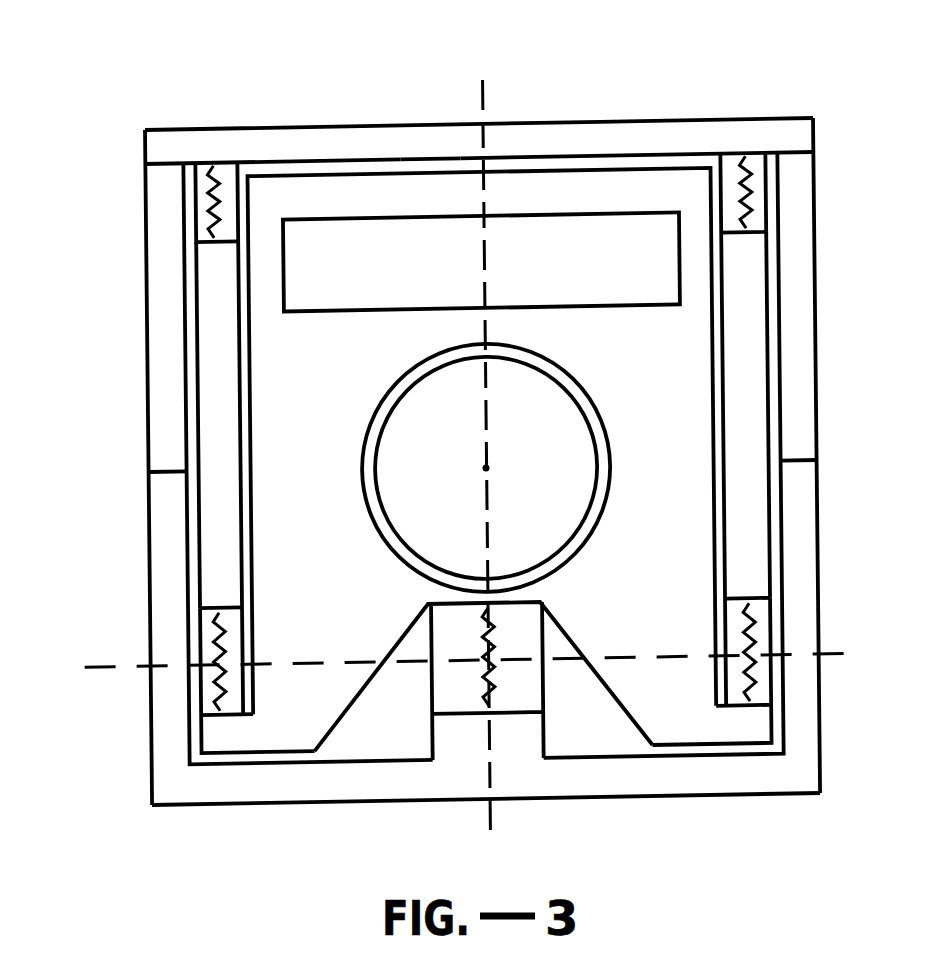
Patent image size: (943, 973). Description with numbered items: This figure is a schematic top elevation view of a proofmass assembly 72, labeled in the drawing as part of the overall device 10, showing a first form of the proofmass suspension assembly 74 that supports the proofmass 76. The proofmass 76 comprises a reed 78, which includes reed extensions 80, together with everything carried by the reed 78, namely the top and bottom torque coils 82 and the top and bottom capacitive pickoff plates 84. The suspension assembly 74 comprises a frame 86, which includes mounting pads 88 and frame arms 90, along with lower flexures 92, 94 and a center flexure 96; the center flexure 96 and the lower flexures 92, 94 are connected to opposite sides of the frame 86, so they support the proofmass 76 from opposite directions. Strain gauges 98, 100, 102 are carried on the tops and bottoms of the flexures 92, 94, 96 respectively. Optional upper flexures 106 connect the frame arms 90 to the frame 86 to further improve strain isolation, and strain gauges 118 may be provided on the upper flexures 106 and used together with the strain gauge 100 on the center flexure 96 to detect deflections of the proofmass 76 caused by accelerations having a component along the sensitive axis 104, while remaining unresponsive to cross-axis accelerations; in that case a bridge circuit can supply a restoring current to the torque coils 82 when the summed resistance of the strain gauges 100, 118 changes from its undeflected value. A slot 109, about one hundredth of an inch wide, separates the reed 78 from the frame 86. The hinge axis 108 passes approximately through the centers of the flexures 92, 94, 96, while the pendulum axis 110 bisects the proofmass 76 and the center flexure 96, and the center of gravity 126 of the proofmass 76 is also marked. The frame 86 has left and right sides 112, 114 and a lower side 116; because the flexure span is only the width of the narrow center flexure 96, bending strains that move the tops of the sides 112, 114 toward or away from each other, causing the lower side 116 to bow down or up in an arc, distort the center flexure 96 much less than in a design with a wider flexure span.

The apparatus 10 is at (615, 133).
The proofmass assembly 72 is at (153, 46).
The proofmass suspension assembly 74 is at (93, 120).
The proofmass 76 is at (92, 168).
The reed 78 is at (255, 383).
The reed extensions 80 is at (224, 740).
The torque coils 82 is at (567, 549).
The capacitive pickoff plates 84 is at (578, 297).
The frame 86 is at (681, 78).
The mounting pads 88 is at (147, 280).
The frame arms 90 is at (202, 335).
The lower flexure 92 is at (202, 632).
The lower flexure 94 is at (767, 630).
The center flexure 96 is at (538, 702).
The strain gauge 98 is at (202, 712).
The strain gauge 100 is at (487, 675).
The strain gauge 102 is at (753, 683).
The sensitive axis 104 is at (486, 468).
The upper flexures 106 is at (195, 228).
The hinge axis 108 is at (92, 665).
The slot 109 is at (430, 166).
The pendulum axis 110 is at (484, 102).
The left side of frame 112 is at (150, 599).
The right side of frame 114 is at (820, 585).
The lower side of frame 116 is at (553, 793).
The strain gauges 118 is at (208, 202).
The center of gravity 126 is at (486, 468).